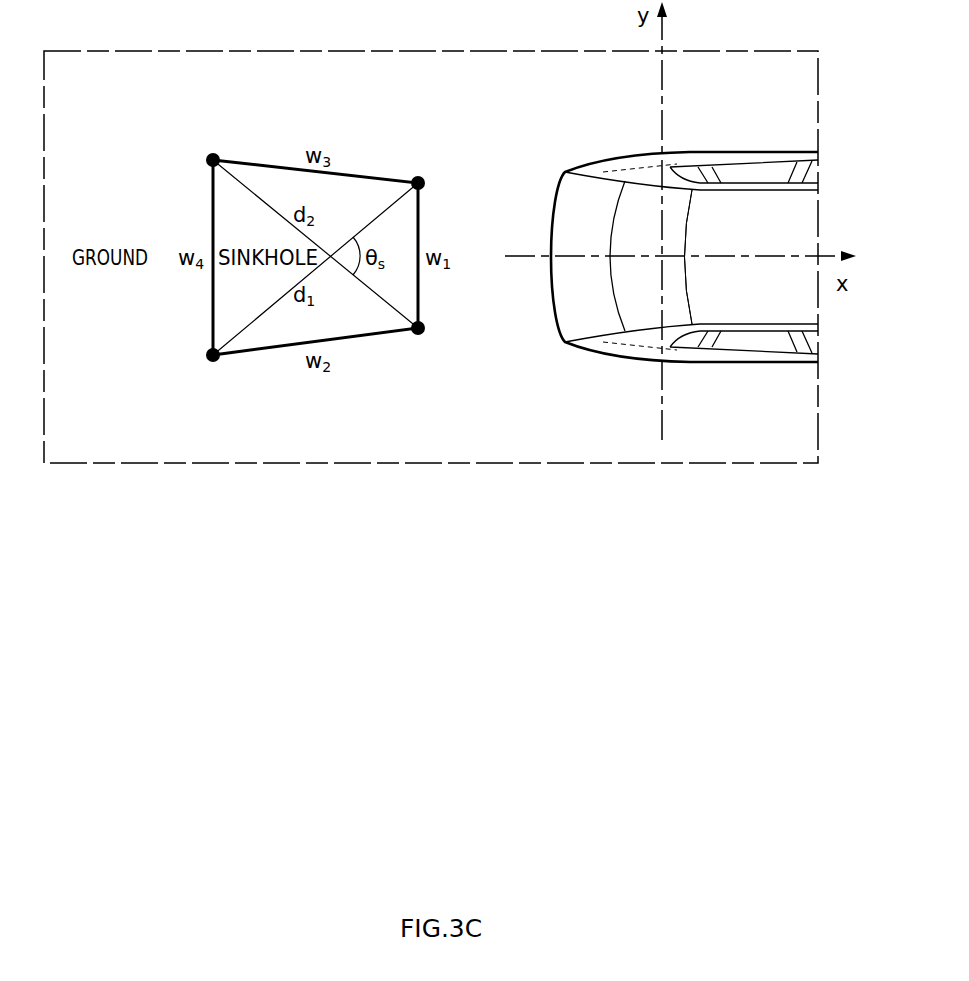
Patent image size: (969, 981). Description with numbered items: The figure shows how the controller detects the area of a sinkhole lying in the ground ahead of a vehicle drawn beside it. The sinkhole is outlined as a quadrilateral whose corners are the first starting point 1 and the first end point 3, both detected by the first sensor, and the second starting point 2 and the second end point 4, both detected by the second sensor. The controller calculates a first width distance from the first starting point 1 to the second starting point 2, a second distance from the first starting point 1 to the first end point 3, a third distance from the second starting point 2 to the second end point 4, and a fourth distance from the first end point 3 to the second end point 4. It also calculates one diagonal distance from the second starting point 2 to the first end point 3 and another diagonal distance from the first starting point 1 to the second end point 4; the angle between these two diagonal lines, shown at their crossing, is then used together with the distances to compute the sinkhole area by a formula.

The first starting point 1 is at (431, 344).
The second starting point 2 is at (431, 165).
The first end point 3 is at (216, 370).
The second end point 4 is at (216, 142).